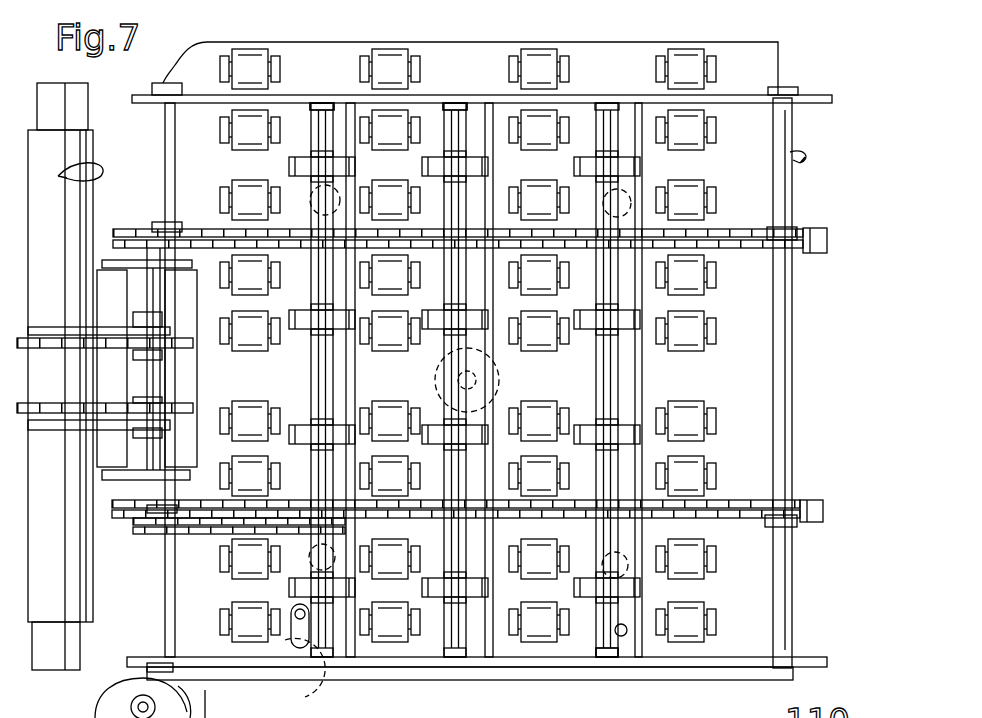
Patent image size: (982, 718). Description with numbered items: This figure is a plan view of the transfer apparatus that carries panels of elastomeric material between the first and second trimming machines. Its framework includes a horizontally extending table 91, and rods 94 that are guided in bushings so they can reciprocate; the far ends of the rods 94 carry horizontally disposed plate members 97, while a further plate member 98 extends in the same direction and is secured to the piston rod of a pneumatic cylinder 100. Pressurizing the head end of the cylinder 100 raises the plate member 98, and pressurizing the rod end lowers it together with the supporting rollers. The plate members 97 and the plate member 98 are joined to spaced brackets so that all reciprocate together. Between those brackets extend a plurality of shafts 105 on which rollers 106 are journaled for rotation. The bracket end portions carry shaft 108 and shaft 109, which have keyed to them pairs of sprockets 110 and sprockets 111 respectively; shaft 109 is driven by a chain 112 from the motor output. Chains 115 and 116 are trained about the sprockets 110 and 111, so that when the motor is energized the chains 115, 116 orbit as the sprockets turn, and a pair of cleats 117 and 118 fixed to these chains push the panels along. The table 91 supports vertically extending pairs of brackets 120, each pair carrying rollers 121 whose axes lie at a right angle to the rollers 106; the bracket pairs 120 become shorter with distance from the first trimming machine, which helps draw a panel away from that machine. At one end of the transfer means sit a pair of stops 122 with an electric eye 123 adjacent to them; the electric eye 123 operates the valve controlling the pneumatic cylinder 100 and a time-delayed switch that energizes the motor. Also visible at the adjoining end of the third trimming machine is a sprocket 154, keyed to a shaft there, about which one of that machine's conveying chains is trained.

The table 91 is at (773, 63).
The rods 94 is at (628, 195).
The plate members 97 is at (338, 100).
The plate member 98 is at (445, 130).
The pneumatic cylinder 100 is at (499, 380).
The shafts 105 is at (343, 112).
The rollers 106 is at (290, 165).
The shaft 108 is at (777, 672).
The shaft 109 is at (165, 118).
The sprockets 110 is at (783, 222).
The sprockets 111 is at (167, 222).
The chain 112 is at (190, 533).
The chain 115 is at (730, 518).
The chain 116 is at (758, 250).
The cleat 117 is at (812, 228).
The cleat 118 is at (812, 512).
The brackets 120 is at (512, 62).
The rollers 121 is at (700, 123).
The stops 122 is at (614, 630).
The electric eye 123 is at (303, 693).
The sprocket 154 is at (108, 692).